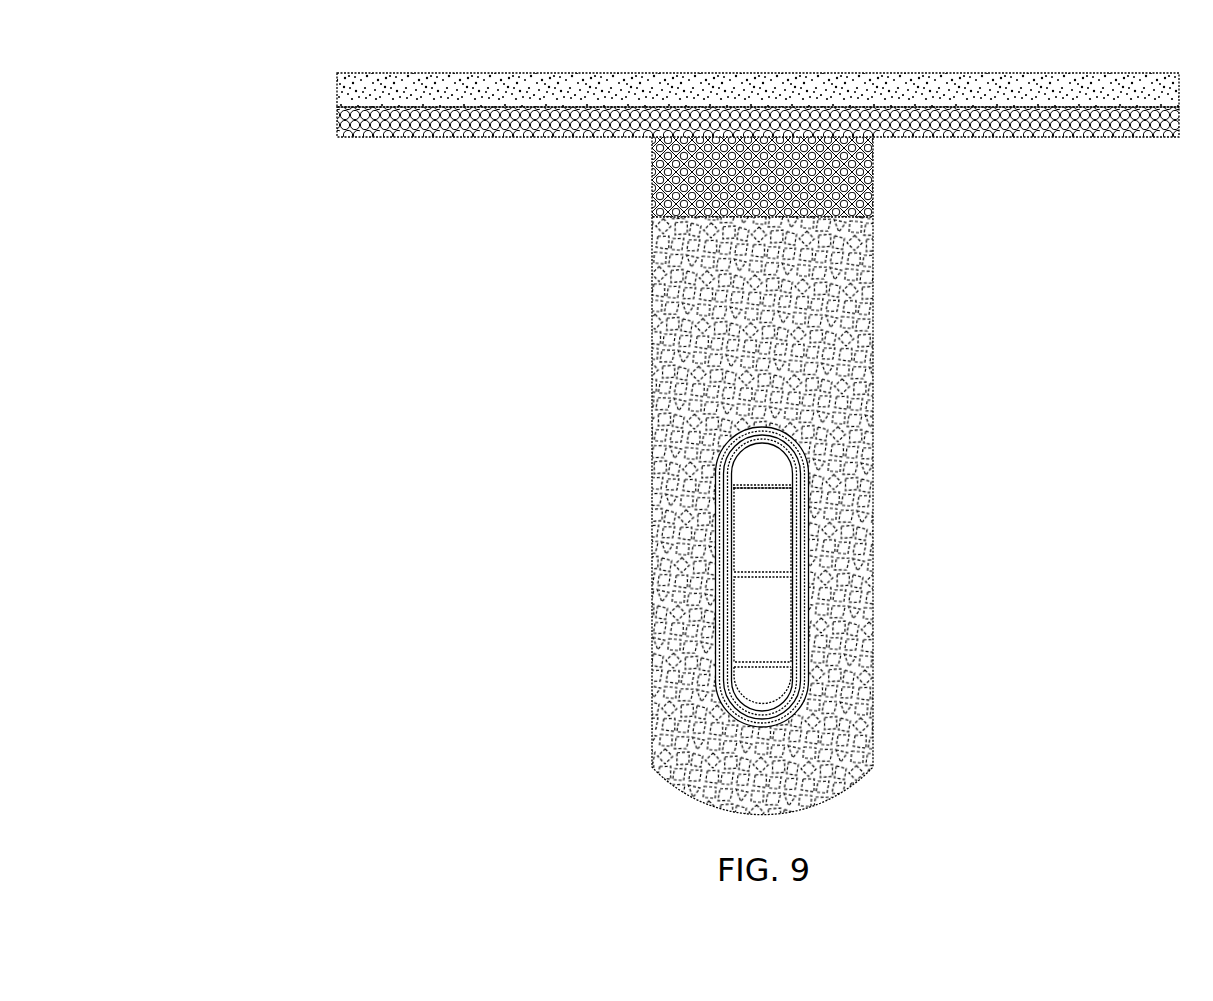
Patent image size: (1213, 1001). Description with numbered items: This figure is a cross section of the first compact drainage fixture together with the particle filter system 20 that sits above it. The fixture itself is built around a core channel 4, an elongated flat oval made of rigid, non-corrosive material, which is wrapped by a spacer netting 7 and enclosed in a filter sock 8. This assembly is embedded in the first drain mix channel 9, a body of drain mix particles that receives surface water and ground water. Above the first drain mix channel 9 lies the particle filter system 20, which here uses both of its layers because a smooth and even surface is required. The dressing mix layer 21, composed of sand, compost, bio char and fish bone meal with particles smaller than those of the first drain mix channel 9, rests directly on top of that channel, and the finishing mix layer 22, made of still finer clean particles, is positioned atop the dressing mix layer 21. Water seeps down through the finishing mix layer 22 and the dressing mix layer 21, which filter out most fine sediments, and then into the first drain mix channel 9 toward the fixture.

The particle filter system 20 is at (706, 120).
The finishing mix layer 22 is at (977, 86).
The dressing mix layer 21 is at (866, 165).
The first drain mix channel 9 is at (870, 362).
The filter sock 8 is at (805, 550).
The spacer netting 7 is at (727, 530).
The core channel 4 is at (792, 588).